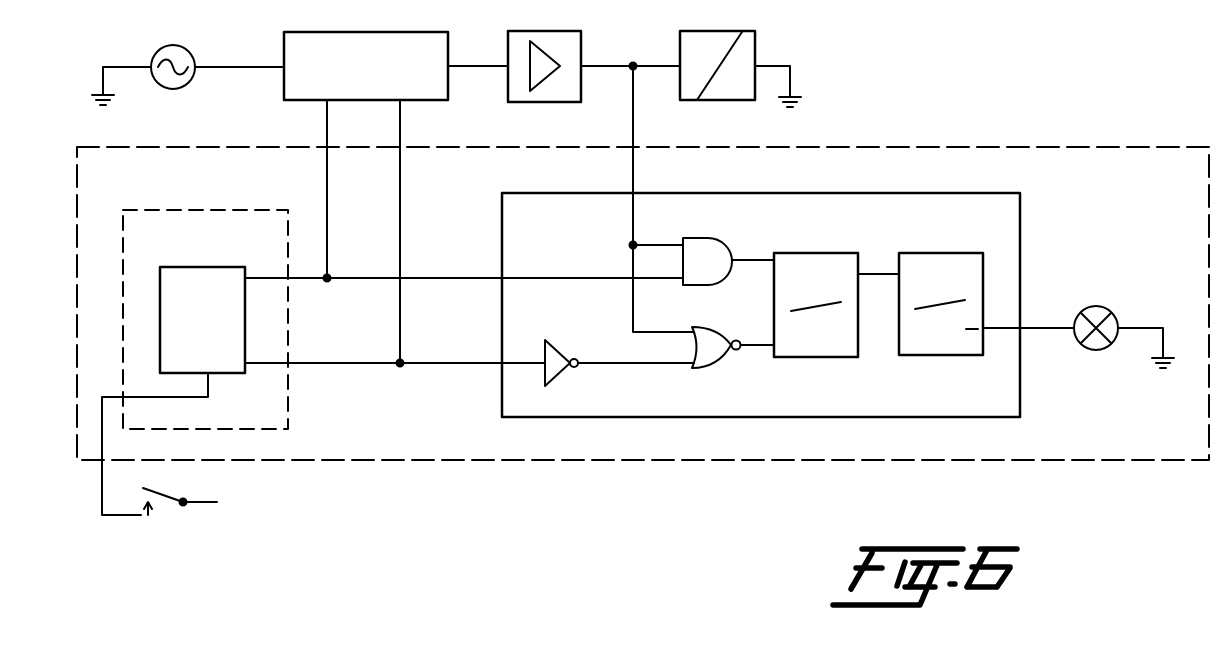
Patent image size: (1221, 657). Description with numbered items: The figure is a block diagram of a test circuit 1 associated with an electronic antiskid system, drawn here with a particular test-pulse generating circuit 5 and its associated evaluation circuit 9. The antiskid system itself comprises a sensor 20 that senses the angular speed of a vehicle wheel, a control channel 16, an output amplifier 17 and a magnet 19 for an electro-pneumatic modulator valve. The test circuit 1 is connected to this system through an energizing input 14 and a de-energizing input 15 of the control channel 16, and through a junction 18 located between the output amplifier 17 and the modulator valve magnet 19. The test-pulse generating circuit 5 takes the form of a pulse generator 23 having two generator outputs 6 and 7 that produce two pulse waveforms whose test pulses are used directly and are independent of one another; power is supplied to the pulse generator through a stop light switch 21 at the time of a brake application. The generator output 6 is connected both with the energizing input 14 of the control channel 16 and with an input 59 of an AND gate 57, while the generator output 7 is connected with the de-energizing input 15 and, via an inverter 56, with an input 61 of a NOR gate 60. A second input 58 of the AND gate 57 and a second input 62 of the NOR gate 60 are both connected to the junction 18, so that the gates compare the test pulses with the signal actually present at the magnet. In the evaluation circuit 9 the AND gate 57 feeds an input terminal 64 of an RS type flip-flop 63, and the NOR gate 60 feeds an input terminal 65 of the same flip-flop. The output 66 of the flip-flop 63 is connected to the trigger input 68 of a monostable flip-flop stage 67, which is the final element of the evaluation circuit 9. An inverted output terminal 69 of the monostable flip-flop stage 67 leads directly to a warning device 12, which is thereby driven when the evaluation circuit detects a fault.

The test circuit 1 is at (400, 463).
The test-pulse generating circuit 5 is at (203, 208).
The generator output 6 is at (245, 278).
The generator output 7 is at (247, 366).
The evaluation circuit 9 is at (502, 222).
The warning device 12 is at (1098, 309).
The energizing input 14 is at (325, 103).
The de-energizing input 15 is at (403, 103).
The control channel 16 is at (391, 31).
The output amplifier 17 is at (549, 31).
The junction 18 is at (656, 182).
The magnet 19 is at (724, 31).
The sensor 20 is at (190, 52).
The stop light switch 21 is at (170, 498).
The pulse generator 23 is at (204, 265).
The inverter 56 is at (556, 346).
The AND gate 57 is at (716, 237).
The second input 58 is at (681, 244).
The input 59 is at (681, 278).
The NOR gate 60 is at (718, 366).
The input 61 is at (687, 364).
The second input 62 is at (687, 330).
The RS type flip-flop 63 is at (830, 253).
The input terminal 64 is at (770, 261).
The input terminal 65 is at (773, 342).
The output 66 is at (862, 272).
The monostable flip-flop stage 67 is at (955, 253).
The trigger input 68 is at (896, 276).
The inverted output terminal 69 is at (984, 327).